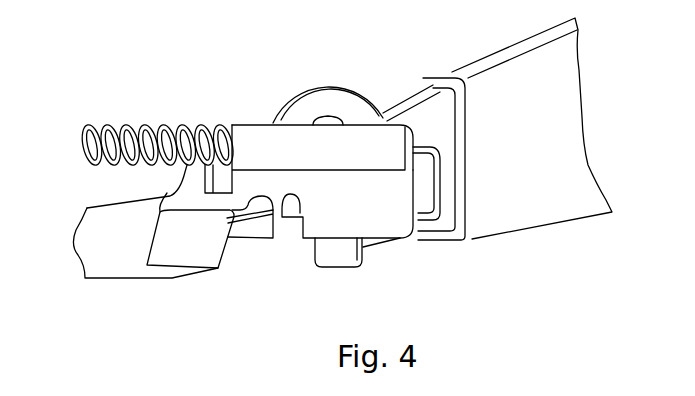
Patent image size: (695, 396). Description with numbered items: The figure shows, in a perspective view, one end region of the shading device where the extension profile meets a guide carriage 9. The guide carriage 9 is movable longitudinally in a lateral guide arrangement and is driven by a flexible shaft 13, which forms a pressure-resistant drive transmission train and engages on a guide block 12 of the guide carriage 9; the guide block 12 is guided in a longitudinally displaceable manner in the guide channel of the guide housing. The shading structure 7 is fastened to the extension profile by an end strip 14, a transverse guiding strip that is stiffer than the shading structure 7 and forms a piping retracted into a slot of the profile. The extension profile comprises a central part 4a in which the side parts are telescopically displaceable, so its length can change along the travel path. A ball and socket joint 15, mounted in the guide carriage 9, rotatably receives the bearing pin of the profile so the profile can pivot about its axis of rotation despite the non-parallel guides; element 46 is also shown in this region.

The central part 4a is at (540, 217).
The bracket 46 is at (418, 115).
The ball and socket joint 15 is at (332, 120).
The guide block 12 is at (245, 140).
The guide carriage 9 is at (398, 227).
The end strip 14 is at (213, 251).
The shading structure 7 is at (103, 230).
The flexible shaft 13 is at (150, 132).